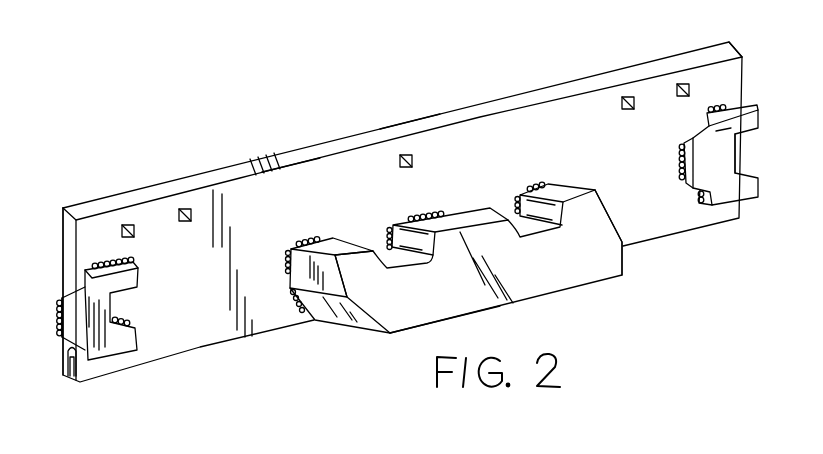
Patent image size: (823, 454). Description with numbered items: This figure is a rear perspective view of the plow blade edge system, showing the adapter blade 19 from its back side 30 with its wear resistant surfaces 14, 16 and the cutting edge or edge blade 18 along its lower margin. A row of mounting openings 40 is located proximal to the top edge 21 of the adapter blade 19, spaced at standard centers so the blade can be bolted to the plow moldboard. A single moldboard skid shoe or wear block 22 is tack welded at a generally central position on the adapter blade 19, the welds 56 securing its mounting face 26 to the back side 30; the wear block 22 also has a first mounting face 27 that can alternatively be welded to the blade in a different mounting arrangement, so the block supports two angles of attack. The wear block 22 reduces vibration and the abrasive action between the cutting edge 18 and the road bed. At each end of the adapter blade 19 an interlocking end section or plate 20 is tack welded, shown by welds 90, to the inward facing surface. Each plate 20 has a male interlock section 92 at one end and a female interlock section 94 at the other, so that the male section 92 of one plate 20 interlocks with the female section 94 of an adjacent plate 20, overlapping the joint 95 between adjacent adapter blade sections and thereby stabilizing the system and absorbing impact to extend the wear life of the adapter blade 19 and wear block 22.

The wear resistant surface 14 is at (165, 360).
The wear resistant surface 16 is at (408, 335).
The edge blade 18 is at (62, 374).
The adapter blade 19 is at (231, 169).
The interlocking plate 20 is at (107, 353).
The top edge 21 is at (411, 124).
The wear block 22 is at (463, 275).
The mounting face 26 is at (290, 249).
The first mounting face 27 is at (603, 257).
The backside 30 is at (290, 192).
The mounting opening 40 is at (182, 209).
The weld 56 is at (424, 208).
The weld 90 is at (100, 263).
The male interlock section 92 is at (72, 320).
The female interlock section 94 is at (737, 136).
The joint 95 is at (66, 262).